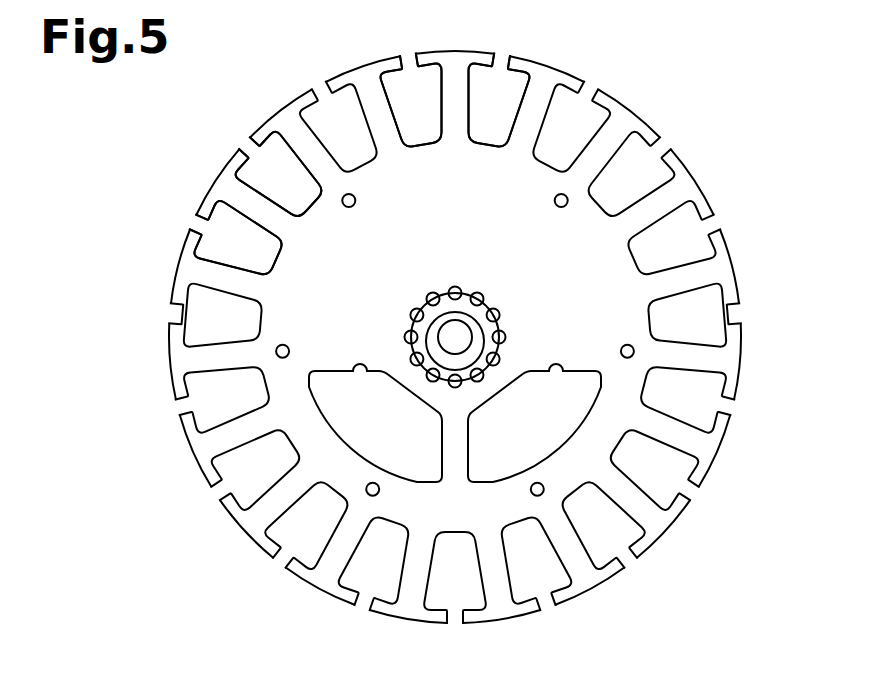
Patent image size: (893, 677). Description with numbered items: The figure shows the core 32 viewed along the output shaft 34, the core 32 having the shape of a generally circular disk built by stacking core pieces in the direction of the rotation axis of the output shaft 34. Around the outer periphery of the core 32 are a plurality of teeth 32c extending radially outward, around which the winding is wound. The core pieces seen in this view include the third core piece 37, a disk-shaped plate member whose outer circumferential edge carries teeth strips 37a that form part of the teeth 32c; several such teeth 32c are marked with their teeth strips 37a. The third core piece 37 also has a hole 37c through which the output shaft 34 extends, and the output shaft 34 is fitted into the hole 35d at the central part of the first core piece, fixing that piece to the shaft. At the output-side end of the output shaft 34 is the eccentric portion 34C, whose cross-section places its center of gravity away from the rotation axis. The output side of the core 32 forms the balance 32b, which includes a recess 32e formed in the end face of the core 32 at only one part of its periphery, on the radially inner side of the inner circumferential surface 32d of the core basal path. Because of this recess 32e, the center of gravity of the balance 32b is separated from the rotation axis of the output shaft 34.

The core 32 is at (702, 187).
The balance 32b is at (525, 245).
The teeth 32c is at (297, 145).
The inner circumferential surface 32d is at (400, 470).
The recess 32e is at (362, 372).
The output shaft 34 is at (467, 293).
The eccentric portion 34C is at (473, 345).
The hole 35d is at (422, 305).
The third core piece 37 is at (592, 582).
The teeth strips 37a is at (344, 196).
The hole 37c is at (293, 258).